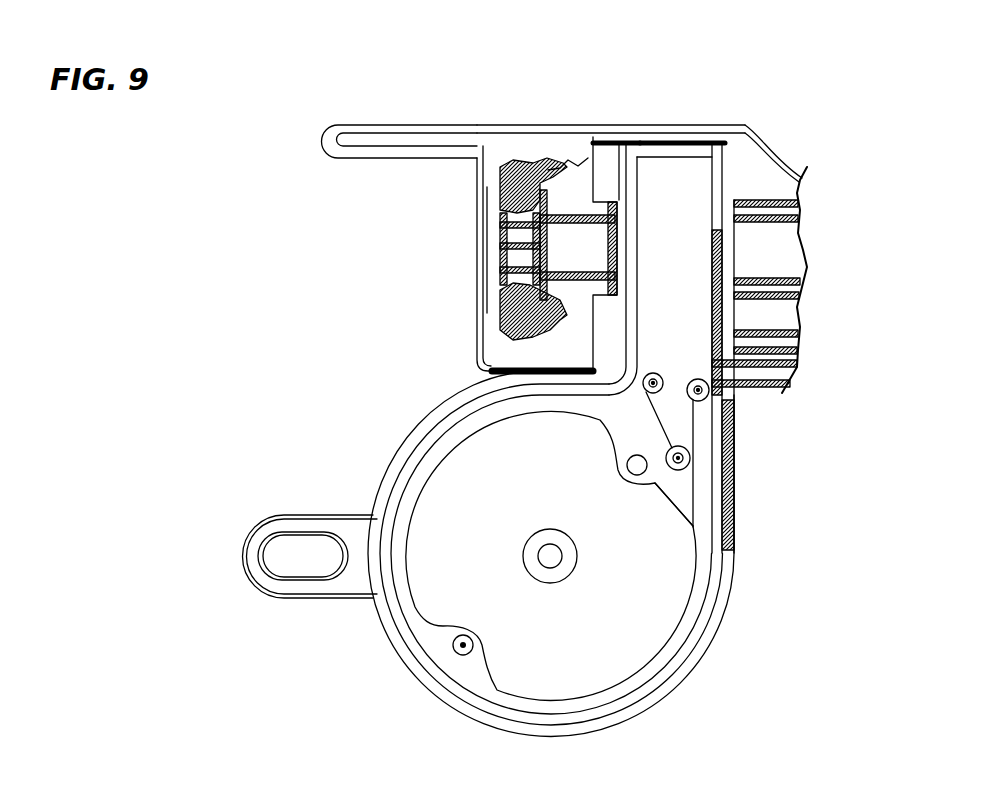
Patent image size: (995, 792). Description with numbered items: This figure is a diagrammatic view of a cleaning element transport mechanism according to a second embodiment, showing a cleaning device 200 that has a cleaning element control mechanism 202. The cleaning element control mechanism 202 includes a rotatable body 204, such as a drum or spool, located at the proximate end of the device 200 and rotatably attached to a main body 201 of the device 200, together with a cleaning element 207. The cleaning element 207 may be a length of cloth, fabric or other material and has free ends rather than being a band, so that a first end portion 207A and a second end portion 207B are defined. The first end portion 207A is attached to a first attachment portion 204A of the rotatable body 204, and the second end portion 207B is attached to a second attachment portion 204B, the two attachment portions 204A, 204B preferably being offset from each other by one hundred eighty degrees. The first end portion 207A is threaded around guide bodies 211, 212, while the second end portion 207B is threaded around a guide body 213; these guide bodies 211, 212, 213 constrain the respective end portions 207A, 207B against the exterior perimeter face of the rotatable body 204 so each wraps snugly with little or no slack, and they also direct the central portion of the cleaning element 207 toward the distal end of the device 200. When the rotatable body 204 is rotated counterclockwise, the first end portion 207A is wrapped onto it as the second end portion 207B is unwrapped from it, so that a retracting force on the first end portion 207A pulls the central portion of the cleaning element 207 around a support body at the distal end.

The cleaning device 200 is at (471, 90).
The main body 201 is at (765, 155).
The cleaning element control mechanism 202 is at (681, 641).
The rotatable body 204 is at (667, 582).
The first attachment portion 204A is at (638, 463).
The second attachment portion 204B is at (462, 646).
The cleaning element 207 is at (695, 497).
The first end portion 207A is at (668, 474).
The second end portion 207B is at (470, 652).
The guide body 211 is at (690, 458).
The guide body 212 is at (656, 372).
The guide body 213 is at (725, 396).